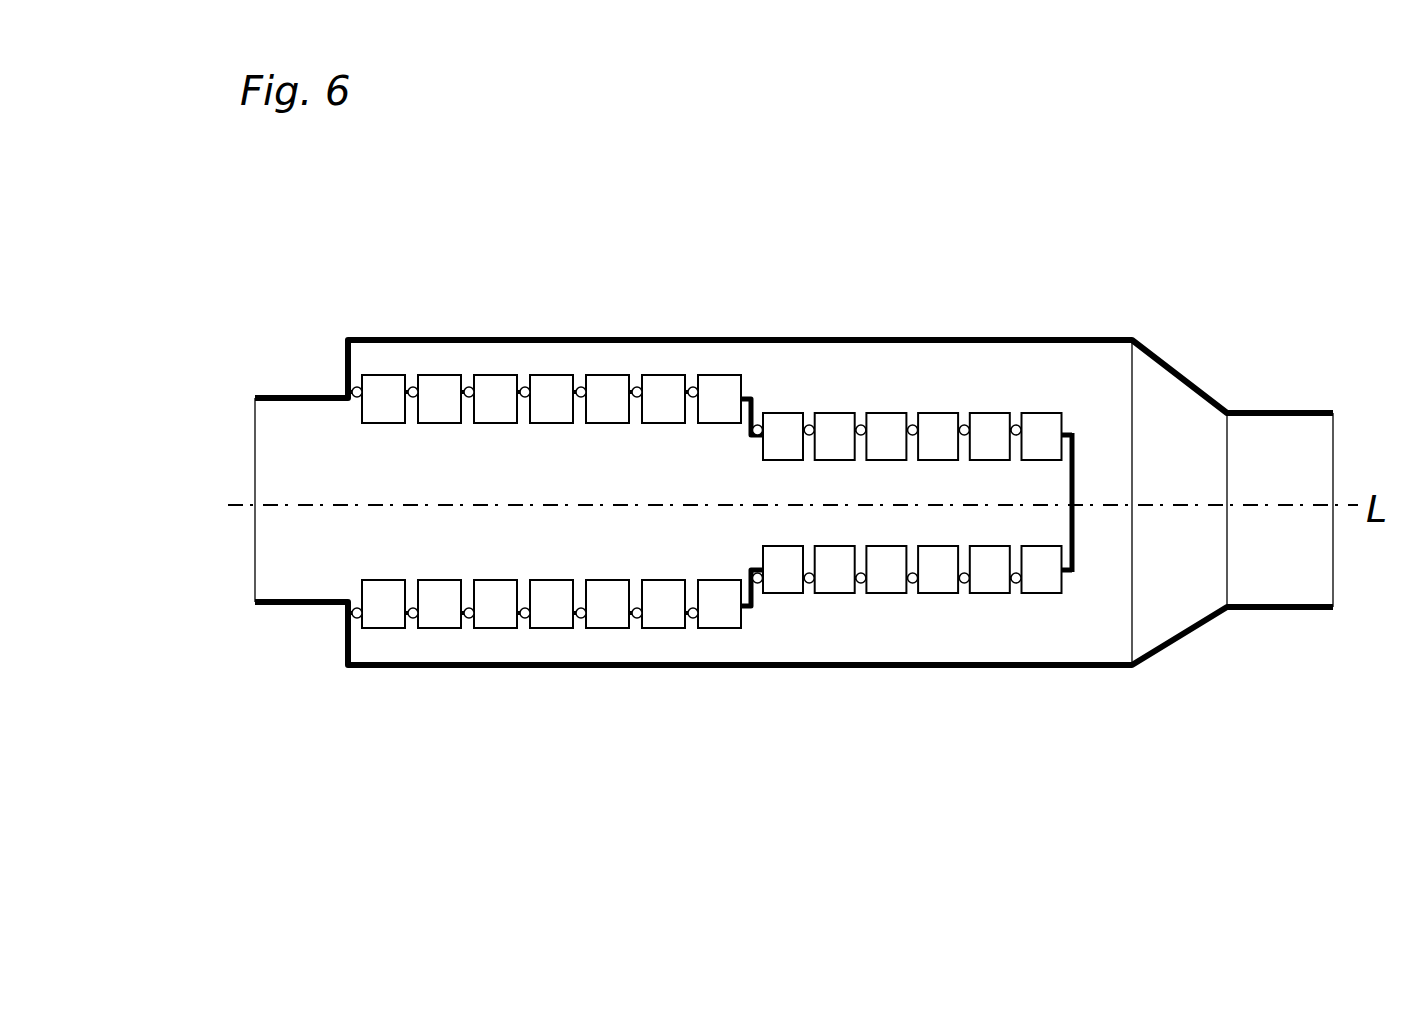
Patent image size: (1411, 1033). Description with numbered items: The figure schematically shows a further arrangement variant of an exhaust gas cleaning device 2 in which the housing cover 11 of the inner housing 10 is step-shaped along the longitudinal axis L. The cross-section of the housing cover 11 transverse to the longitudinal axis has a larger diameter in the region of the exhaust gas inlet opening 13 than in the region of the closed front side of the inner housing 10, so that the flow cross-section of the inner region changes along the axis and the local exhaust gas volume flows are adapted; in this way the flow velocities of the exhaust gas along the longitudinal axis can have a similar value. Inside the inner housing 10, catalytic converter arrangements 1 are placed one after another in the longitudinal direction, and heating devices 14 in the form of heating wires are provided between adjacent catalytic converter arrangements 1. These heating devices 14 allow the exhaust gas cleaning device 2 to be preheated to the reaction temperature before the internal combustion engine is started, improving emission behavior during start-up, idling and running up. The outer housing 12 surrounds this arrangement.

The catalytic converter arrangement 1 is at (387, 392).
The exhaust gas cleaning device 2 is at (1198, 294).
The inner housing 10 is at (1077, 472).
The housing cover 11 is at (1068, 435).
The housing 12 is at (681, 338).
The exhaust gas inlet opening 13 is at (333, 449).
The heating device 14 is at (470, 388).